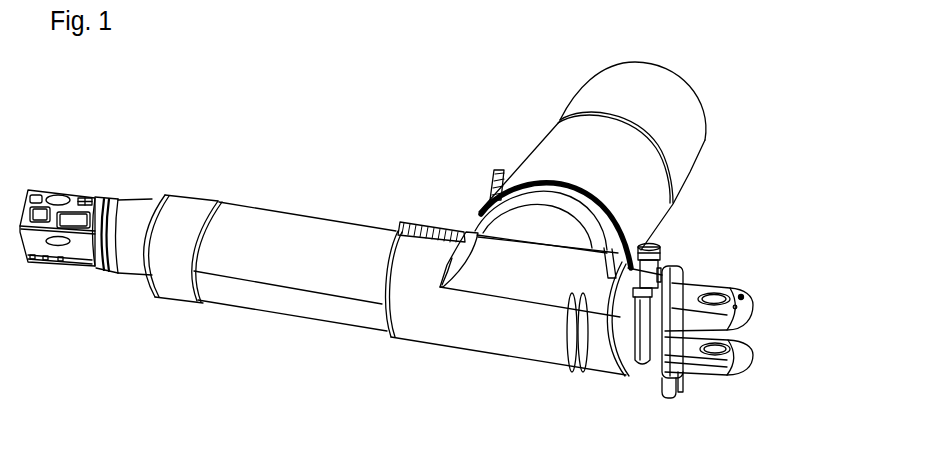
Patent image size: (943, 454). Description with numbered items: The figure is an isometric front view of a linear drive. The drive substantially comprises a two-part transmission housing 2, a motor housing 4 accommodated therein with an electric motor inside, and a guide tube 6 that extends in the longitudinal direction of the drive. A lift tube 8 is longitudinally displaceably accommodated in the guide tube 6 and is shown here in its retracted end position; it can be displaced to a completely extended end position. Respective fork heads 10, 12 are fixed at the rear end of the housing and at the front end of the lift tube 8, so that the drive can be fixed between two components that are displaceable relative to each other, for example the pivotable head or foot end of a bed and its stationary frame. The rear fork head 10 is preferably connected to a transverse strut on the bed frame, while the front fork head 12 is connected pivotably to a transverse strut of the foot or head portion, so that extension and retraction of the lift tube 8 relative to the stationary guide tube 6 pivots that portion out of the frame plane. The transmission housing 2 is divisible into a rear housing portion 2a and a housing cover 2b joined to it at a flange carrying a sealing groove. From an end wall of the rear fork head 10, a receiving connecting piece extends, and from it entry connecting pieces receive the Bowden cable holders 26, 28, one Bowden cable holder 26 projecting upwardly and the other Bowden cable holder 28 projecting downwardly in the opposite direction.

The transmission housing 2 is at (577, 287).
The rear housing portion 2a is at (648, 213).
The housing cover 2b is at (517, 323).
The motor housing 4 is at (672, 122).
The guide tube 6 is at (300, 292).
The lift tube 8 is at (133, 227).
The rear fork head 10 is at (762, 308).
The front fork head 12 is at (65, 201).
The Bowden cable holder 26 is at (645, 251).
The Bowden cable holder 28 is at (681, 392).